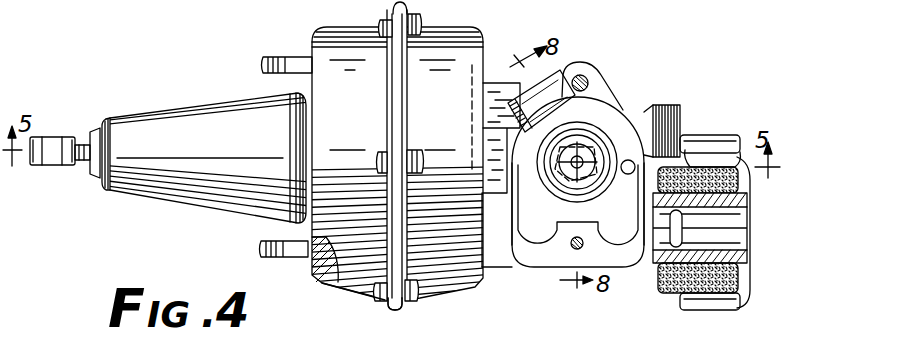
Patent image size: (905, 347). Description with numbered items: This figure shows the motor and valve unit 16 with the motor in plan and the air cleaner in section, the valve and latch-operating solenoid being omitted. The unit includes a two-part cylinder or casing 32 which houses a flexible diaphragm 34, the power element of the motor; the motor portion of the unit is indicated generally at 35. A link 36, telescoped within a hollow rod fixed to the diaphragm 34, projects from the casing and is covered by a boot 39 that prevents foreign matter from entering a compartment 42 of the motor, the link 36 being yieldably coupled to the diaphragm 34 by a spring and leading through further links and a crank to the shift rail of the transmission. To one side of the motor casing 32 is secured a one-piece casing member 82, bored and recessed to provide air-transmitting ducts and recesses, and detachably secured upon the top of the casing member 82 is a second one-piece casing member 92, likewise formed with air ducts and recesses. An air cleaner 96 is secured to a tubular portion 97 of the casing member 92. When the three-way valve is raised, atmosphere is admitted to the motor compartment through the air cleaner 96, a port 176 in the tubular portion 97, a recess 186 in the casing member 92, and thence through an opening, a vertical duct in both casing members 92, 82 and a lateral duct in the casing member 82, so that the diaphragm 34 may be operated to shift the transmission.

The motor and valve unit 16 is at (612, 80).
The two-part cylinder or casing 32 is at (362, 297).
The flexible diaphragm 34 is at (395, 311).
The motor portion 35 is at (455, 30).
The link 36 is at (52, 140).
The boot 39 is at (193, 191).
The compartment 42 is at (308, 278).
The casing member 82 is at (712, 145).
The casing member 92 is at (622, 113).
The air cleaner 96 is at (708, 308).
The tubular portion 97 is at (746, 200).
The port 176 is at (658, 268).
The recess 186 is at (537, 243).